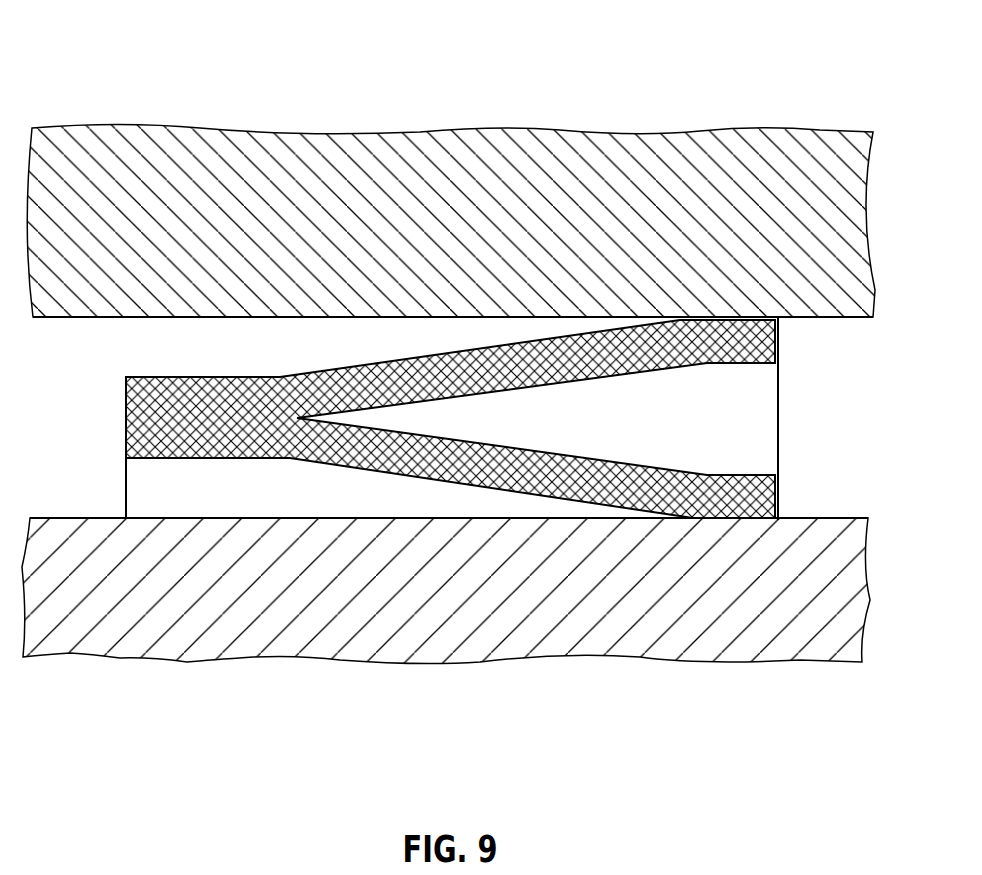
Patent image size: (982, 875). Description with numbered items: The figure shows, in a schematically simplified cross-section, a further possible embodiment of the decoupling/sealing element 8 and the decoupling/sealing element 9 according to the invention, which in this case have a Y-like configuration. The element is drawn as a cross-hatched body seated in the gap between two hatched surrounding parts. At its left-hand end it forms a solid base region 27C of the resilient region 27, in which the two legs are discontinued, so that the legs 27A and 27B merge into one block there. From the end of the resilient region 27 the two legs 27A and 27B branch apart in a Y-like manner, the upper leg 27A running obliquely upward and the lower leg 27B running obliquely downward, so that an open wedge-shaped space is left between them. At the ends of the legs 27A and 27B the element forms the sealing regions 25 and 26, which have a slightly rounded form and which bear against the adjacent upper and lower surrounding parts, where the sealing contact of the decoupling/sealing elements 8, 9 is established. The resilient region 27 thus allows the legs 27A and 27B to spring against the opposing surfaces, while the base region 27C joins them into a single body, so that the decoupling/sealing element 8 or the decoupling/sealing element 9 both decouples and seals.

The sealing region 25 is at (727, 307).
The sealing region 26 is at (730, 534).
The resilient region 27 is at (447, 392).
The leg 27A is at (472, 363).
The leg 27B is at (488, 427).
The base region 27C is at (190, 427).
The contact / sealing interface between insert and wall 8, 9 is at (452, 530).
The decoupling/sealing element 8 is at (452, 419).
The decoupling/sealing element 9 is at (577, 530).